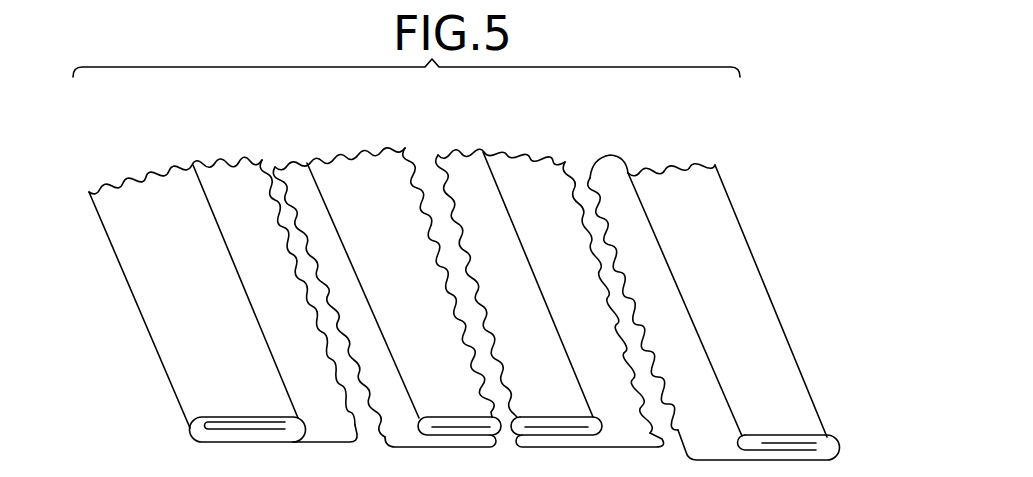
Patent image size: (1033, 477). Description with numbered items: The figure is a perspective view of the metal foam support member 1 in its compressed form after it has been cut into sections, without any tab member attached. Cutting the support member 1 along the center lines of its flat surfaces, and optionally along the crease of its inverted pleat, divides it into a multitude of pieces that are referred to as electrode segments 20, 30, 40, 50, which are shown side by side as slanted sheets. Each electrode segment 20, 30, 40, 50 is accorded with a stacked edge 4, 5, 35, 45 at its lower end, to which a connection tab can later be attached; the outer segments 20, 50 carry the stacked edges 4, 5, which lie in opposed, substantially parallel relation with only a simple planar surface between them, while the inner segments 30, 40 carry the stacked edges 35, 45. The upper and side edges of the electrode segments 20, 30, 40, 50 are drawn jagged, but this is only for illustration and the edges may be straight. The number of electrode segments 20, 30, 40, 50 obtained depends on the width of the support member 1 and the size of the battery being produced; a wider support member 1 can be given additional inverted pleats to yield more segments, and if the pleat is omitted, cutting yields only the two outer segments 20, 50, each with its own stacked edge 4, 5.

The metal foam support member 1 is at (851, 354).
The electrode segment 20 is at (151, 152).
The electrode segment 30 is at (339, 135).
The electrode segment 40 is at (534, 137).
The electrode segment 50 is at (650, 146).
The stacked edge 4 is at (189, 432).
The stacked edge 35 is at (463, 433).
The stacked edge 45 is at (568, 435).
The stacked edge 5 is at (834, 448).